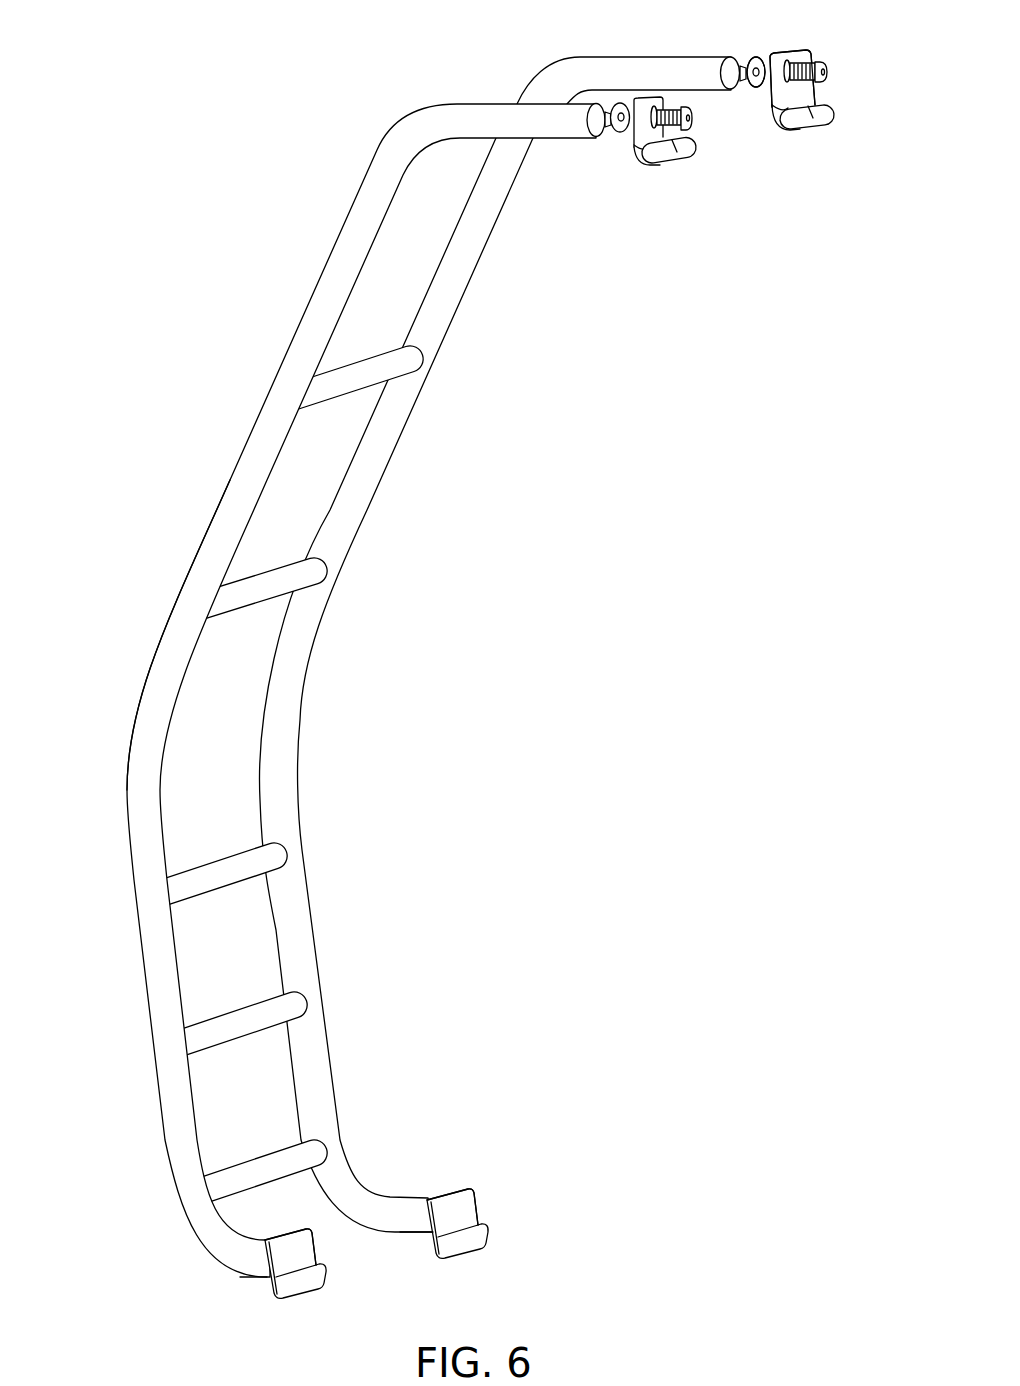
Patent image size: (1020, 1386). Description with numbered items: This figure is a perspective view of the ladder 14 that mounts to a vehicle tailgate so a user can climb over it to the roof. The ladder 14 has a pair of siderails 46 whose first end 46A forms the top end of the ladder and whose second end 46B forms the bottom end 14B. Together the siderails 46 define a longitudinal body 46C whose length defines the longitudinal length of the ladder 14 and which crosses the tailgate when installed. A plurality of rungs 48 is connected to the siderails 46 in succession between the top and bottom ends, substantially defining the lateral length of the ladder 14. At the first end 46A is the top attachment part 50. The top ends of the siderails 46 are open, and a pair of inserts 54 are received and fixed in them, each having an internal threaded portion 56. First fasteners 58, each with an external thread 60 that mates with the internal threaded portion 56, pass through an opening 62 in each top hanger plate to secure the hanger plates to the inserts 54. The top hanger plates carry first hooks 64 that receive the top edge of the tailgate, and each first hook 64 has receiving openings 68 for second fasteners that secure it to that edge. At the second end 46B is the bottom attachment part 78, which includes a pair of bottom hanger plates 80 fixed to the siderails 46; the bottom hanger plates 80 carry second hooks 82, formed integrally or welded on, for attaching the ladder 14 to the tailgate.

The ladder 14 is at (281, 159).
The bottom end 14B is at (517, 1164).
The siderails 46 is at (253, 427).
The first end 46A is at (584, 122).
The second end 46B is at (266, 1282).
The longitudinal body 46C is at (148, 578).
The rungs 48 is at (347, 393).
The top attachment part 50 is at (830, 22).
The inserts 54 is at (612, 128).
The internal threaded portion 56 is at (622, 103).
The first fasteners 58 is at (692, 125).
The external thread 60 is at (663, 106).
The opening 62 is at (656, 97).
The first hooks 64 is at (668, 158).
The receiving opening 68 is at (636, 160).
The bottom attachment part 78 is at (421, 1126).
The bottom hanger plates 80 is at (297, 1256).
The second hooks 82 is at (308, 1286).